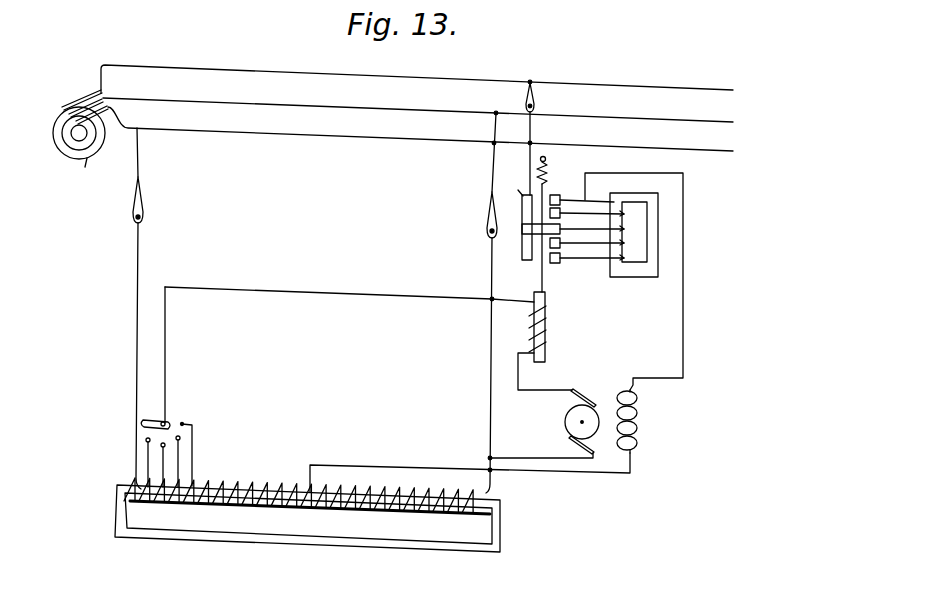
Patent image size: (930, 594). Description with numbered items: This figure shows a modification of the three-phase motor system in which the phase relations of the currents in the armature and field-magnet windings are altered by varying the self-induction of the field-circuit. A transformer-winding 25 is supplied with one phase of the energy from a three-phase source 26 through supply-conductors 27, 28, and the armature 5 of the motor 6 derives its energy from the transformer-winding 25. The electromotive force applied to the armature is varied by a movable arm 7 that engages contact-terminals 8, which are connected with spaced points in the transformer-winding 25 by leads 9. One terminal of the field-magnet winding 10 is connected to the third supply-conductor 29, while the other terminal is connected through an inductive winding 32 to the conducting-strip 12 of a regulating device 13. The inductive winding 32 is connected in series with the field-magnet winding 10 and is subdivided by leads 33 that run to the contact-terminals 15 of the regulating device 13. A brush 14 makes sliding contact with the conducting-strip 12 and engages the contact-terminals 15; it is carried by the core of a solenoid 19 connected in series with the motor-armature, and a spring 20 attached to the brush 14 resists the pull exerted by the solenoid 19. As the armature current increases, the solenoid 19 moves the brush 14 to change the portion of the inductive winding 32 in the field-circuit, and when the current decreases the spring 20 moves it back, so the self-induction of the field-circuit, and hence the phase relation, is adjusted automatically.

The armature 5 is at (565, 423).
The motor 6 is at (610, 402).
The movable arm 7 is at (155, 420).
The contact-terminals 8 is at (168, 441).
The leads 9 is at (193, 464).
The field-magnet winding 10 is at (640, 419).
The conducting-strip 12 is at (507, 303).
The regulating device 13 is at (535, 264).
The brush 14 is at (524, 236).
The contact-terminals 15 is at (553, 265).
The solenoid 19 is at (547, 333).
The spring 20 is at (561, 168).
The transformer-winding 25 is at (249, 484).
The three-phase source 26 is at (80, 146).
The supply-conductor 27 is at (407, 136).
The supply-conductor 28 is at (407, 108).
The third supply-conductor 29 is at (407, 78).
The inductive winding 32 is at (636, 232).
The leads 33 is at (592, 268).